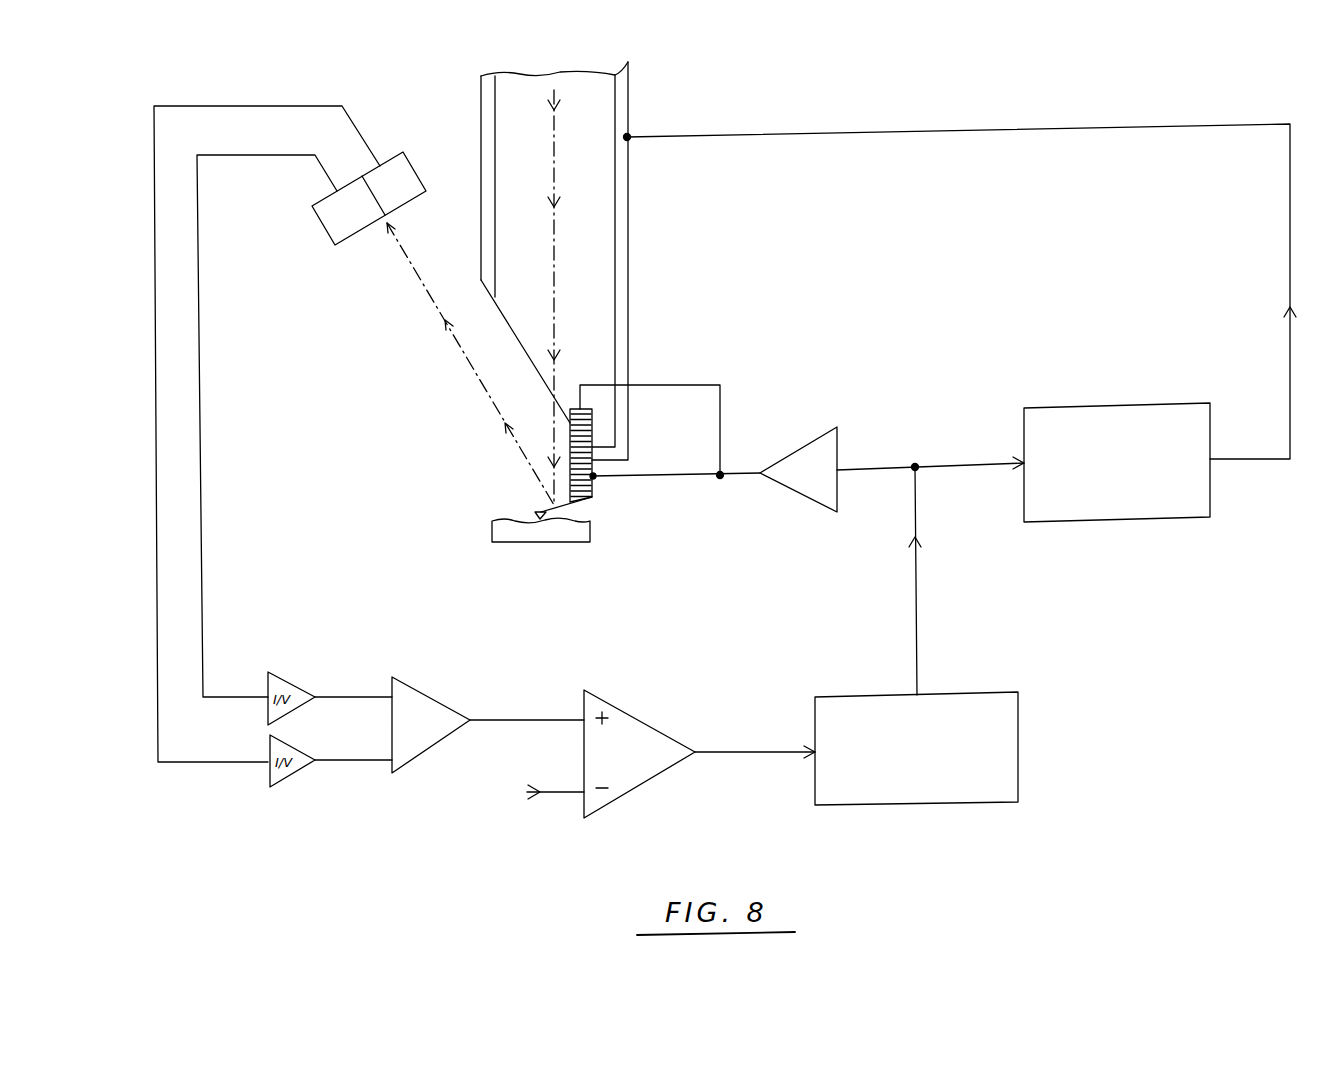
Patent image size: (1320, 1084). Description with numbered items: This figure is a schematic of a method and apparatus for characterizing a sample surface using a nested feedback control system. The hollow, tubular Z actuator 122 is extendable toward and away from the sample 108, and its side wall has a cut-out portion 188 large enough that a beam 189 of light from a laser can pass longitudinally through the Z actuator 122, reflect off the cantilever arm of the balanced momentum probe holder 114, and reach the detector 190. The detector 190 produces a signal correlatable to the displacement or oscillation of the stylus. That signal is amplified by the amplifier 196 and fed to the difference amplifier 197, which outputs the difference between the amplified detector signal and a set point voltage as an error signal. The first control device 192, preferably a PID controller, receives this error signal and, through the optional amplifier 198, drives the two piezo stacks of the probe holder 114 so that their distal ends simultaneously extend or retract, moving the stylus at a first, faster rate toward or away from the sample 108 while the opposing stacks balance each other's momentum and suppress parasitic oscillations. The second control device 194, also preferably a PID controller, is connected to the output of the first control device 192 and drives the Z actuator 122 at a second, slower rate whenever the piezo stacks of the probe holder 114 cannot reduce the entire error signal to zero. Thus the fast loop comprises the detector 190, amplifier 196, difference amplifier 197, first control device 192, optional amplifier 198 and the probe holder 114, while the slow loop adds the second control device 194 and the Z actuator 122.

The sample 108 is at (492, 527).
The balanced momentum probe holder 114 is at (612, 493).
The Z actuator 122 is at (622, 197).
The cut-out portion 188 is at (512, 368).
The beam of light 189 is at (553, 175).
The detector 190 is at (403, 152).
The first control device 192 is at (980, 692).
The second control device 194 is at (1205, 362).
The amplifier 196 is at (412, 700).
The difference amplifier 197 is at (635, 722).
The optional amplifier 198 is at (818, 442).